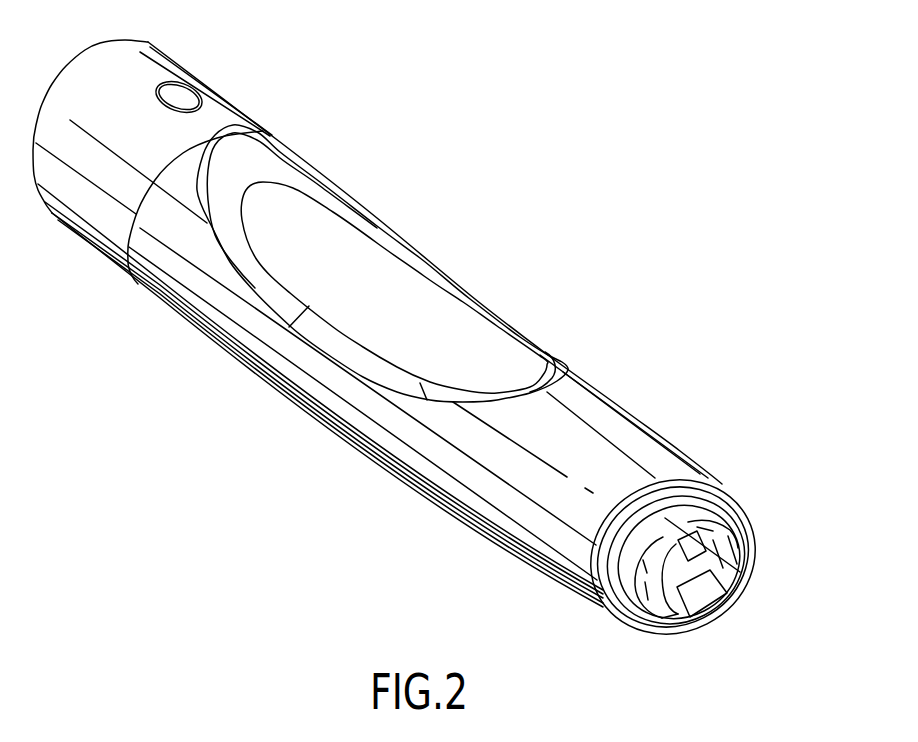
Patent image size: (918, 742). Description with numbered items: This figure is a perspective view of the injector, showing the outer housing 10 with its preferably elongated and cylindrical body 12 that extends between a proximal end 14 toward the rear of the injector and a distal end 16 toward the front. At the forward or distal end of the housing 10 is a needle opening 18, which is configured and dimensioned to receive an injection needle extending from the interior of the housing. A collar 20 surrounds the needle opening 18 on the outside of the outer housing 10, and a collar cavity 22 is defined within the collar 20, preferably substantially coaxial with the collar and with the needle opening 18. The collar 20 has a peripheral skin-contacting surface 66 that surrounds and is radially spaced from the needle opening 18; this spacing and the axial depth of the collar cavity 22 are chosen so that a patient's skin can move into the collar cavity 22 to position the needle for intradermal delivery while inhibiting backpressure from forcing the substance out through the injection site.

The outer housing 10 is at (603, 423).
The body 12 is at (279, 361).
The proximal end 14 is at (263, 133).
The distal end 16 is at (680, 473).
The needle opening 18 is at (750, 567).
The collar 20 is at (625, 607).
The collar cavity 22 is at (710, 598).
The skin-contacting surface 66 is at (744, 520).